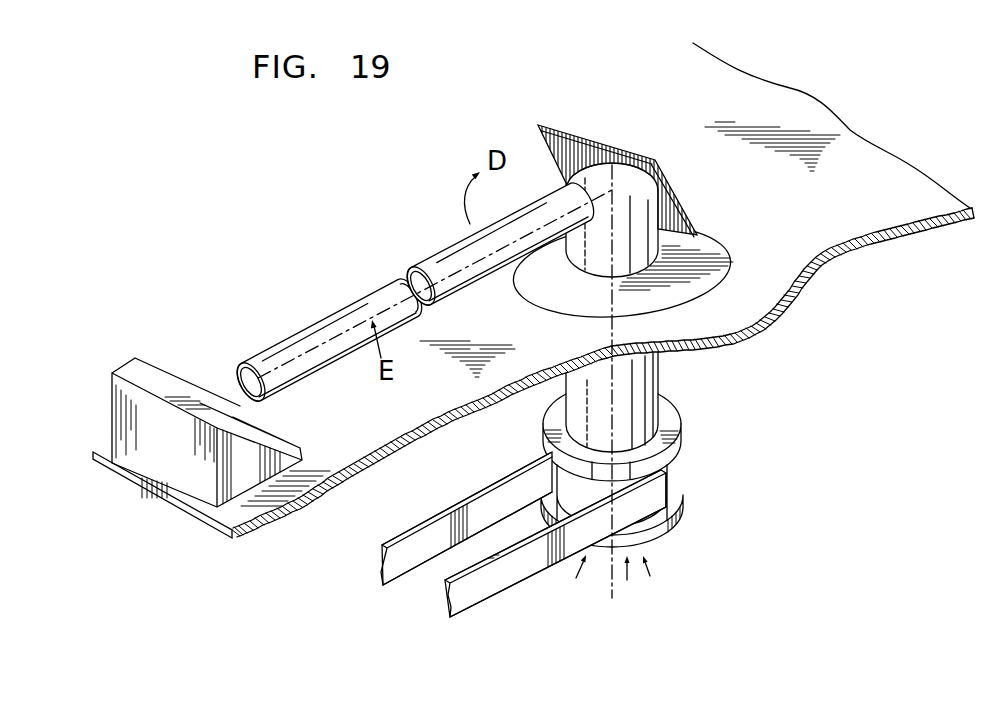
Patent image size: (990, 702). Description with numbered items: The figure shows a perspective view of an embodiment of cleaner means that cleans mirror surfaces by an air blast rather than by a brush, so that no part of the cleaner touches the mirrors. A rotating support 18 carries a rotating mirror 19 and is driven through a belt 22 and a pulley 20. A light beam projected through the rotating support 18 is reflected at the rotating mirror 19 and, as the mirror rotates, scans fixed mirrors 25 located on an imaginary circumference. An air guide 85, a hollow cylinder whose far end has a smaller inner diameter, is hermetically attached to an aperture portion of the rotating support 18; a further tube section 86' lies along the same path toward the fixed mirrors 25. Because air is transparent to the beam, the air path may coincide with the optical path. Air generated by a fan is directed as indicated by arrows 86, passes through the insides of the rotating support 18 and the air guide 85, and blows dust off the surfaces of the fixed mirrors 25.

The rotating support 18 is at (648, 388).
The rotating mirror 19 is at (672, 190).
The pulley 20 is at (675, 450).
The belt 22 is at (487, 497).
The fixed mirror 25 is at (274, 431).
The air guide 85 is at (330, 318).
The tube segment 86' is at (318, 342).
The arrows 86 is at (638, 566).